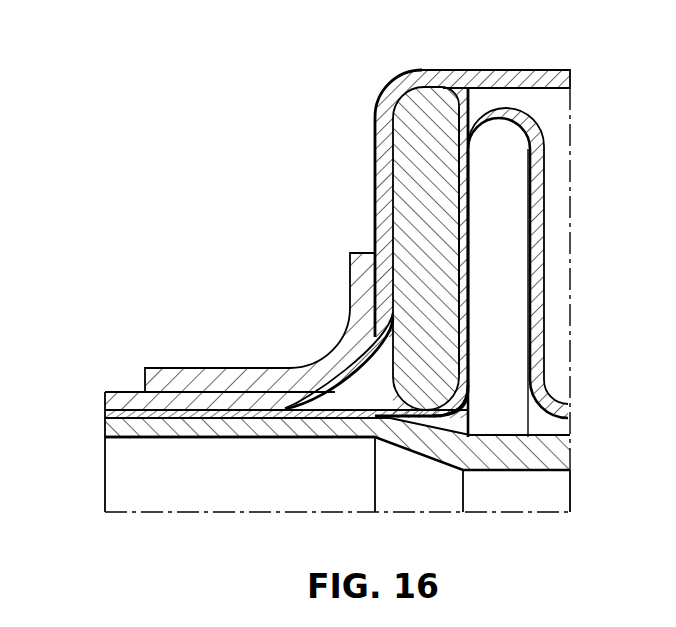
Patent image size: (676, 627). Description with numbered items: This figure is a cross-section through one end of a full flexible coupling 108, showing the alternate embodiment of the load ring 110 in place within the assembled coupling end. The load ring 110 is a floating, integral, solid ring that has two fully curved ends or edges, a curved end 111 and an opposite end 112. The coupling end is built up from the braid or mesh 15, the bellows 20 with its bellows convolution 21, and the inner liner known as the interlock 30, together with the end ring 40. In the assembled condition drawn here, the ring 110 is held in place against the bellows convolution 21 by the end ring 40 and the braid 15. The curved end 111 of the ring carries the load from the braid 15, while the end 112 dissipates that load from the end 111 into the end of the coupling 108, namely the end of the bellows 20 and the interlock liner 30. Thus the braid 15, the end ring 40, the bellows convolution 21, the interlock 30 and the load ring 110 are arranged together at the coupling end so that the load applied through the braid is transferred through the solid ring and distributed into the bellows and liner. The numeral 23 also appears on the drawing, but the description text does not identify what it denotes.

The braid 15 is at (550, 68).
The bellows 20 is at (506, 110).
The bellows convolution 21 is at (468, 280).
The housing body 23 is at (338, 413).
The interlock 30 is at (108, 427).
The end ring 40 is at (205, 377).
The flexible coupling 108 is at (420, 239).
The load ring 110 is at (390, 216).
The curved end 111 is at (425, 90).
The end 112 is at (445, 400).